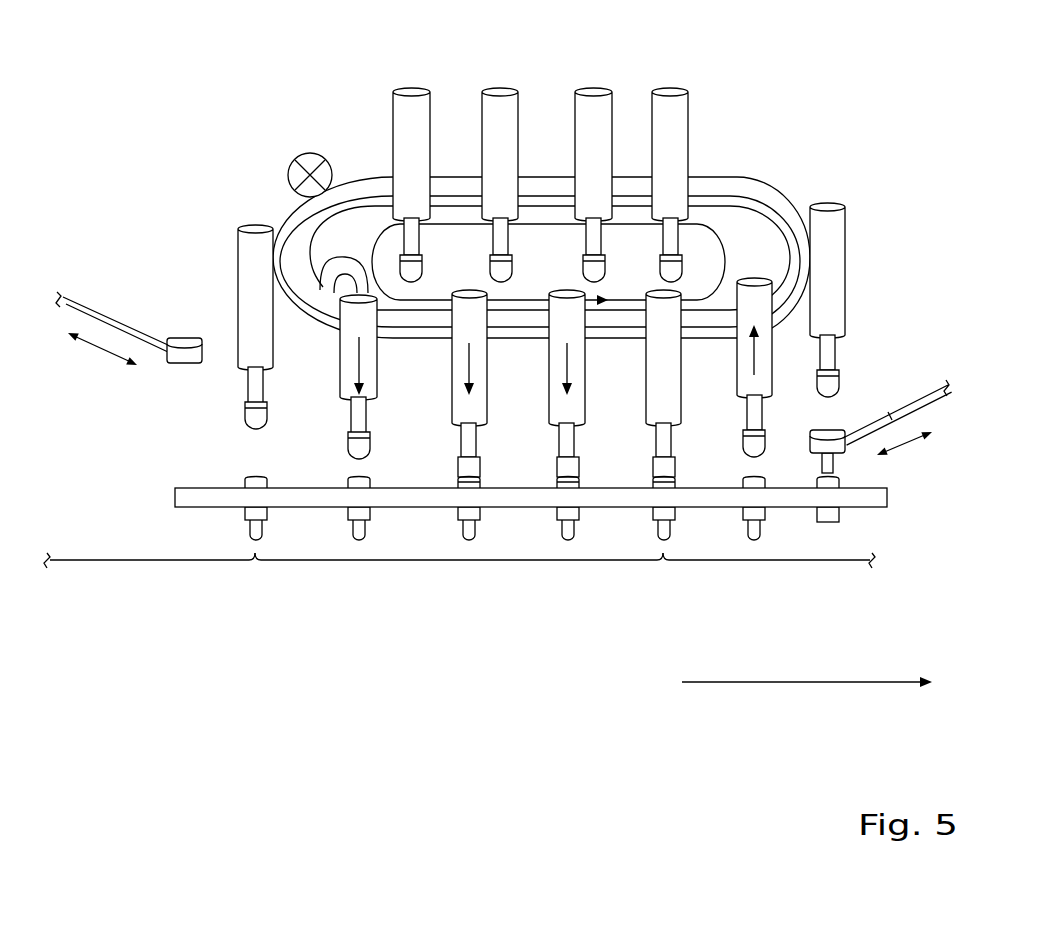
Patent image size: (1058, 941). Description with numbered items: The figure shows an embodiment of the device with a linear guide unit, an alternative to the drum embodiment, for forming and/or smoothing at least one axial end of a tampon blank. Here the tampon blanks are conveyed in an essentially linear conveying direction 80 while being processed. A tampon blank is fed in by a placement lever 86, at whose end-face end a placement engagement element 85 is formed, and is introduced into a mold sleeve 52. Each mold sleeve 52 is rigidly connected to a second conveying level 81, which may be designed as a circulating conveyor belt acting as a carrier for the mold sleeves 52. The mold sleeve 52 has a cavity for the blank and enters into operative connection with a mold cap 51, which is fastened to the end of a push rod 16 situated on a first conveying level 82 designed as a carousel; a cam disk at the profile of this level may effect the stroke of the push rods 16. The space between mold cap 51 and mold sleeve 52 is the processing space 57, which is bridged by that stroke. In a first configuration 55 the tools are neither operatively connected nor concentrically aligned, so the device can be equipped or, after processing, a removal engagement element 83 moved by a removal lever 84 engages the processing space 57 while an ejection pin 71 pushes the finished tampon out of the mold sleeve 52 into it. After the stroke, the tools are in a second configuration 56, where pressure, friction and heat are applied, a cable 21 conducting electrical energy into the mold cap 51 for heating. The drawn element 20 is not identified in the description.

The push rod 16 is at (368, 312).
The rotary drive 20 is at (312, 168).
The cable 21 is at (330, 270).
The mold cap 51 is at (607, 442).
The mold sleeve 52 is at (658, 599).
The first configuration 55 is at (133, 560).
The second configuration 56 is at (455, 560).
The processing space 57 is at (536, 401).
The ejection pin 71 is at (257, 545).
The conveying direction 80 is at (820, 685).
The second conveying level 81 is at (178, 500).
The first conveying level 82 is at (790, 240).
The removal engagement element 83 is at (838, 432).
The removal lever 84 is at (890, 417).
The placement engagement element 85 is at (195, 338).
The placement lever 86 is at (556, 224).